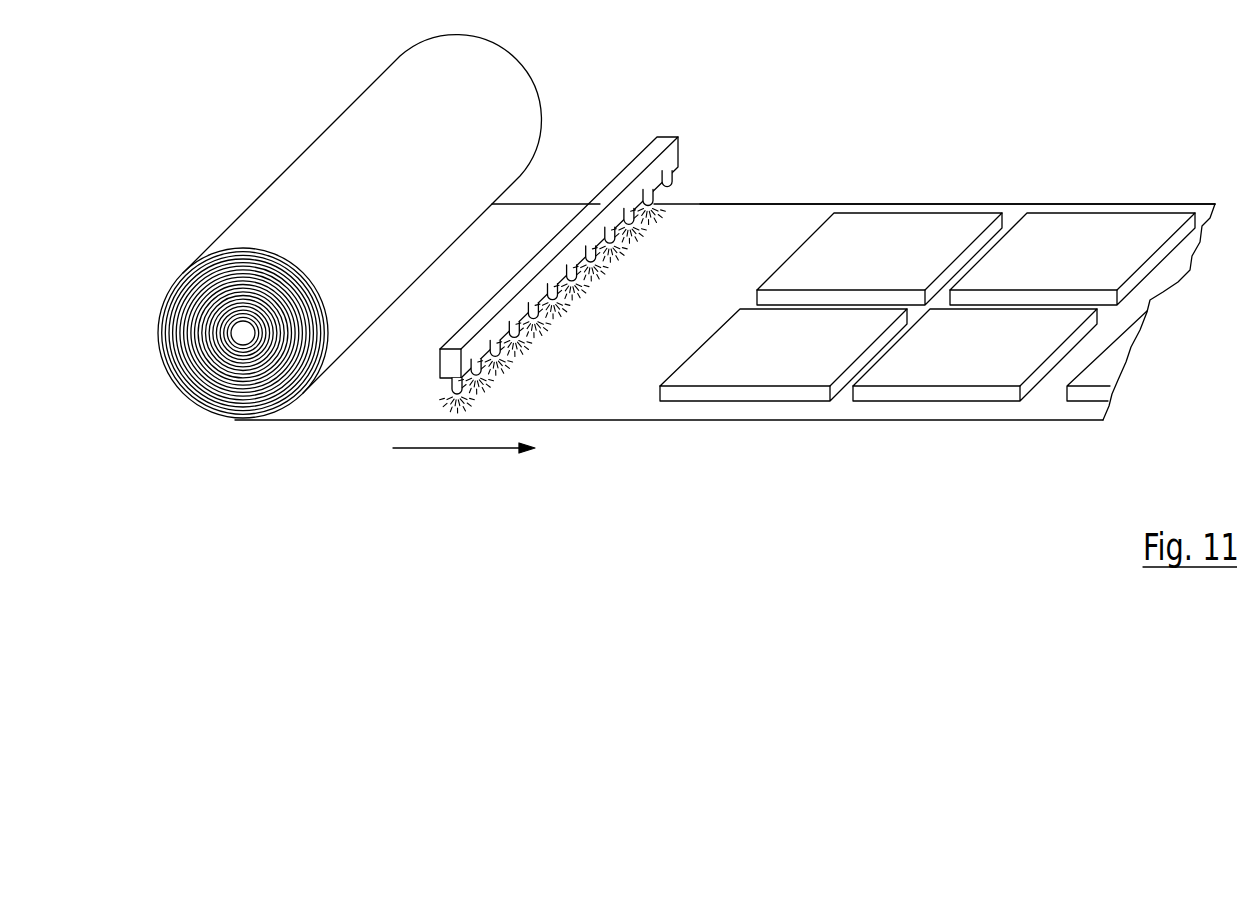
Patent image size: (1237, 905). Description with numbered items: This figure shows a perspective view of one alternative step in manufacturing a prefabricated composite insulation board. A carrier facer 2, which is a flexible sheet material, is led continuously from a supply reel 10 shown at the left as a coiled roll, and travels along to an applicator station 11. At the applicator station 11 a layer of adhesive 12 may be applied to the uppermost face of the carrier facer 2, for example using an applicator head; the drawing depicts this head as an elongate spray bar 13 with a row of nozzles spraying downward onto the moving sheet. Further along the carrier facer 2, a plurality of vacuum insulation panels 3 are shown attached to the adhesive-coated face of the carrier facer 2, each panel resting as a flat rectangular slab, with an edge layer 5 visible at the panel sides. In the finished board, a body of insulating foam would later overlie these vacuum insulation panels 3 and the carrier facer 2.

The carrier facer 2 is at (320, 421).
The vacuum insulation panels 3 is at (939, 304).
The adhesive layer 5 is at (1103, 313).
The supply reel 10 is at (238, 365).
The applicator station 11 is at (597, 206).
The layer of adhesive 12 is at (742, 227).
The spray bar 13 is at (677, 147).